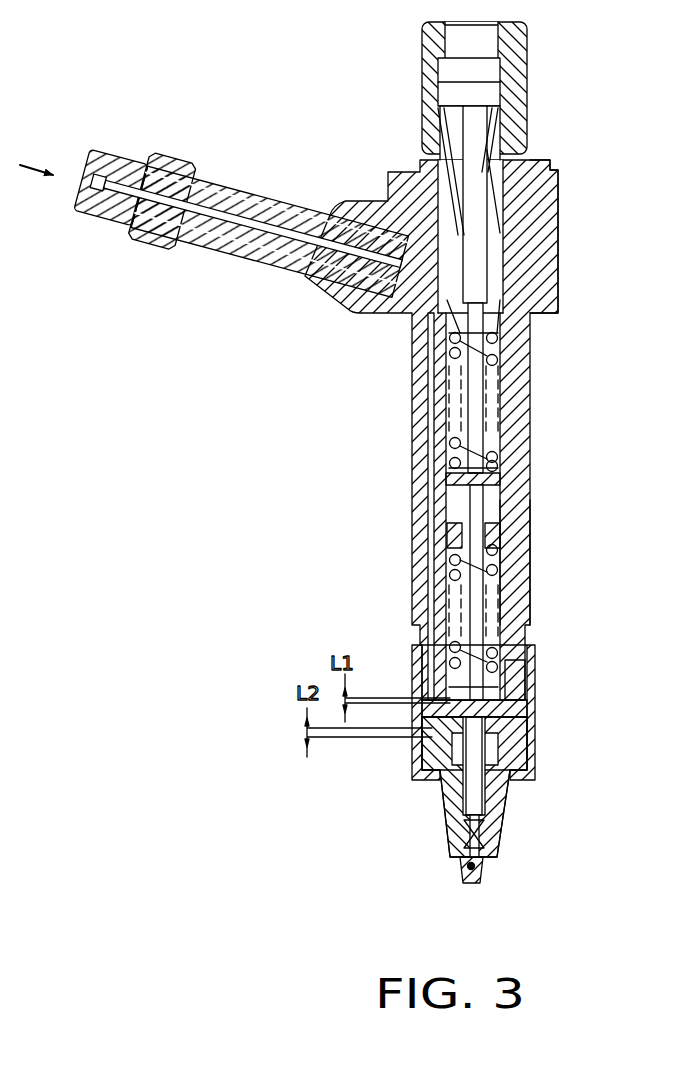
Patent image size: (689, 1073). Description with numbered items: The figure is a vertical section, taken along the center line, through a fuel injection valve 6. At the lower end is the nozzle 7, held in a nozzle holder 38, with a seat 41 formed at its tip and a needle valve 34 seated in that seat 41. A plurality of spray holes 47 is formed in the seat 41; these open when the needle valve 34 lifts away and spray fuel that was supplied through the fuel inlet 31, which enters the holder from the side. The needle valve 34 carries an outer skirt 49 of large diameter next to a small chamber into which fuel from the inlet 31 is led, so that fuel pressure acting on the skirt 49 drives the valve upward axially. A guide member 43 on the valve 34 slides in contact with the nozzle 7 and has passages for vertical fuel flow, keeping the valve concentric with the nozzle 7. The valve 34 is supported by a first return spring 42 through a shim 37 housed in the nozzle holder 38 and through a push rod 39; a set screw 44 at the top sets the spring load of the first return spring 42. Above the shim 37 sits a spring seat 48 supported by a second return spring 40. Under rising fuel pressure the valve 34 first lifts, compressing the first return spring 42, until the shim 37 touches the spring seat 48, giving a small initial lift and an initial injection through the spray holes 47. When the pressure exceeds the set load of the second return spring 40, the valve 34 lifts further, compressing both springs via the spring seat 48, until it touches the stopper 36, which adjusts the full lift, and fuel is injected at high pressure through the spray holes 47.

The fuel injection valve 6 is at (408, 549).
The nozzle 7 is at (446, 792).
The fuel inlet 31 is at (78, 183).
The needle valve 34 is at (500, 793).
The stopper 36 is at (507, 720).
The shim 37 is at (533, 694).
The nozzle holder 38 is at (520, 606).
The push rod 39 is at (472, 580).
The second return spring 40 is at (537, 523).
The seat 41 is at (457, 858).
The first return spring 42 is at (560, 282).
The guide member 43 is at (450, 820).
The set screw 44 is at (528, 162).
The spray holes 47 is at (487, 867).
The spring seat 48 is at (535, 660).
The outer skirt 49 is at (478, 790).